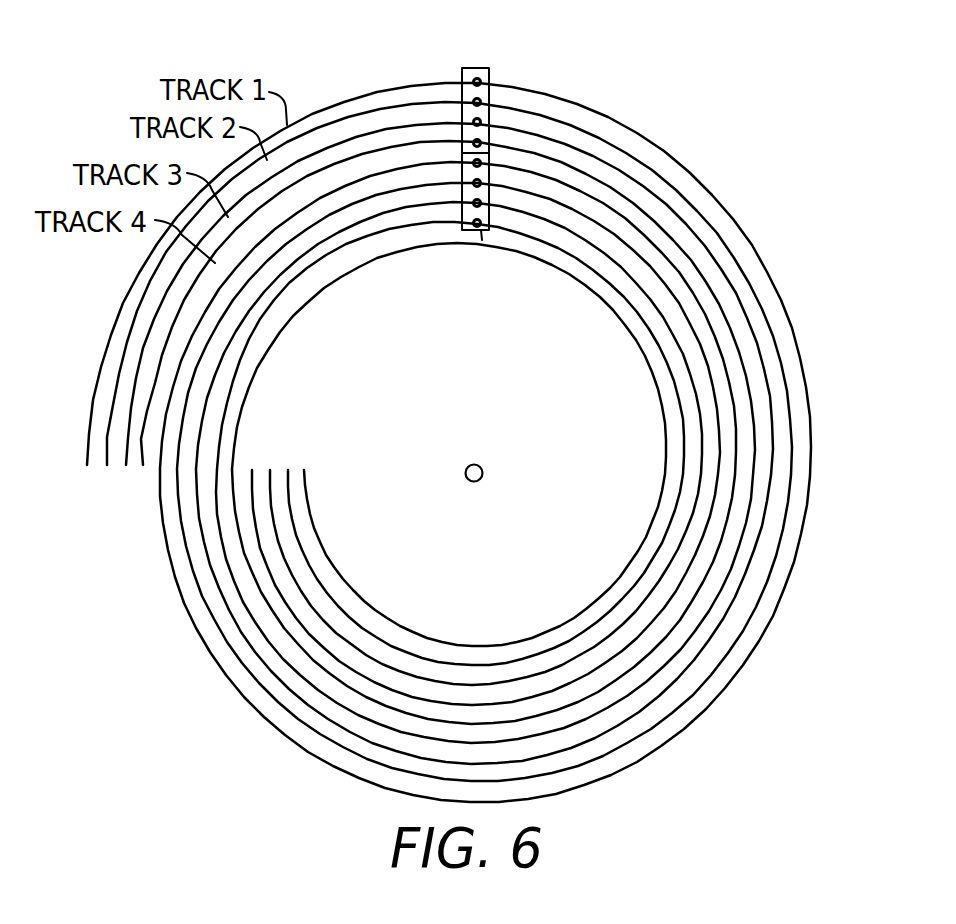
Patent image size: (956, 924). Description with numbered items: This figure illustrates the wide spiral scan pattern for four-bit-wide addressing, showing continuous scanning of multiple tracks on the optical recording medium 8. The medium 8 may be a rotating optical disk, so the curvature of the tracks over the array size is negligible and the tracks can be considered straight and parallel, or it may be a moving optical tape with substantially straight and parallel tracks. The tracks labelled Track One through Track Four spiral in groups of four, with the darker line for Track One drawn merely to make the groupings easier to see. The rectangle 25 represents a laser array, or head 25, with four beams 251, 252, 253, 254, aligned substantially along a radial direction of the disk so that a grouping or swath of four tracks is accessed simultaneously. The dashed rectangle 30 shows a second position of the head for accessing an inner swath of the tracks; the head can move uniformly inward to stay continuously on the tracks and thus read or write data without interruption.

The optical recording medium 8 is at (376, 328).
The laser array 25 is at (471, 68).
The beam 251 is at (484, 78).
The beam 252 is at (484, 98).
The beam 253 is at (471, 120).
The beam 254 is at (470, 142).
The dashed rectangle 30 is at (482, 240).